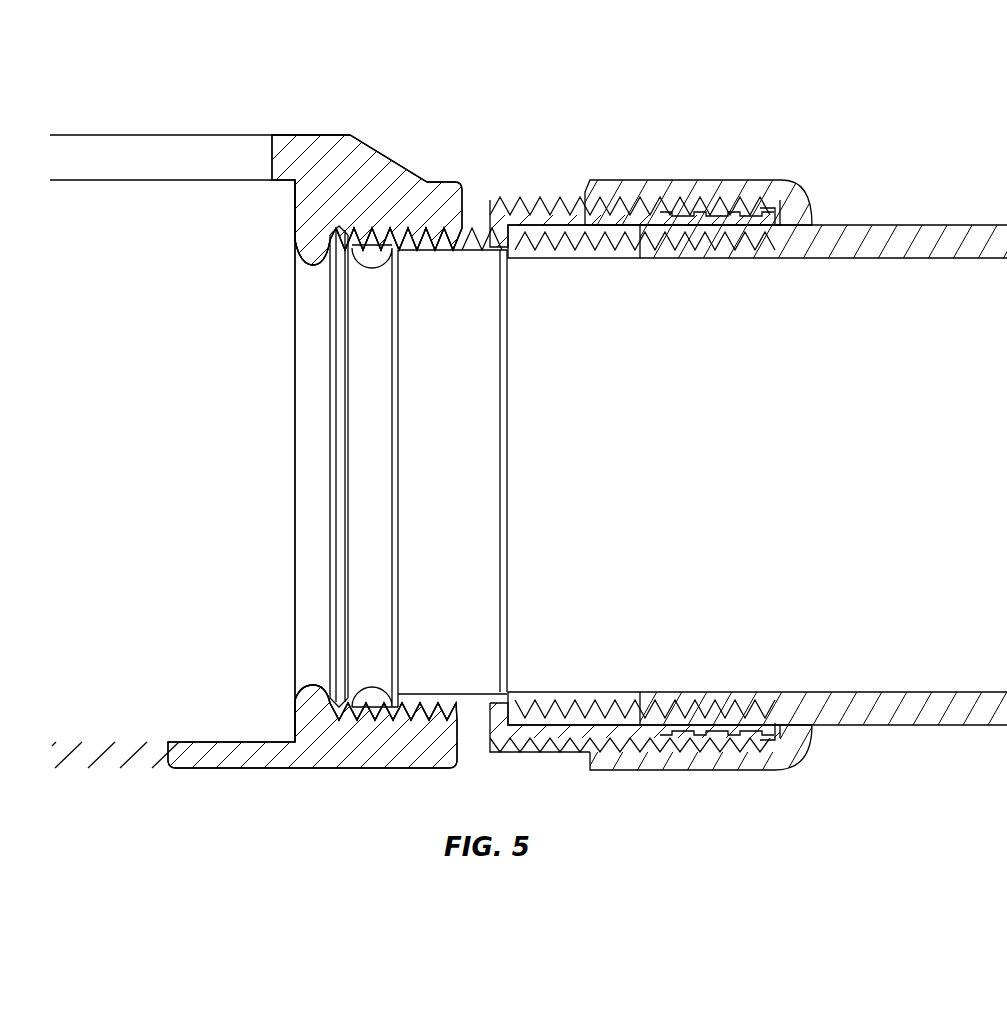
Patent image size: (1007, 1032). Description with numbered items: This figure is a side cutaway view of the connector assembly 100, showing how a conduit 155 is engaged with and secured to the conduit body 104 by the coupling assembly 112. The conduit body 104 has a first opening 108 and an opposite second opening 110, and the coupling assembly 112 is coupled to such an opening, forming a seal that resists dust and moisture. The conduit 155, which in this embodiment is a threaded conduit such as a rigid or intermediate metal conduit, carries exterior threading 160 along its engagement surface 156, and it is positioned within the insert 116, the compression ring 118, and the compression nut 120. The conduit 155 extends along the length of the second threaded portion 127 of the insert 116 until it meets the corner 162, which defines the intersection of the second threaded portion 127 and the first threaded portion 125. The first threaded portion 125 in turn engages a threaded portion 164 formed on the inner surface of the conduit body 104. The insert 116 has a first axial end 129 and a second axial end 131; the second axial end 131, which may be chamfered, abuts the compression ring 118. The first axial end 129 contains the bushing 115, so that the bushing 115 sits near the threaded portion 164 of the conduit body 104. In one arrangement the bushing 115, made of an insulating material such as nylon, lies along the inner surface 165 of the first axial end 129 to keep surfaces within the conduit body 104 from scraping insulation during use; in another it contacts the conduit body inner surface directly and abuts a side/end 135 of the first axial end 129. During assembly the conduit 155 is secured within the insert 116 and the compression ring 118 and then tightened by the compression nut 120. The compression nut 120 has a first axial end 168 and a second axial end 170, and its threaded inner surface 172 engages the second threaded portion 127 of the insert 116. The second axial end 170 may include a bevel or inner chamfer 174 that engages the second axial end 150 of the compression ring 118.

The connector assembly 100 is at (540, 85).
The conduit body 104 is at (149, 145).
The first opening 108 is at (300, 308).
The second opening 110 is at (315, 451).
The coupling assembly 112 is at (678, 152).
The bushing 115 is at (372, 262).
The insert 116 is at (500, 180).
The compression ring 118 is at (728, 218).
The compression nut 120 is at (720, 185).
The first threaded portion 125 is at (418, 238).
The second threaded portion 127 is at (523, 214).
The first axial end 129 is at (418, 613).
The second axial end 131 is at (660, 732).
The side/end 135 is at (397, 250).
The second axial end 150 is at (765, 215).
The conduit 155 is at (948, 232).
The engagement surface 156 is at (580, 238).
The exterior threading 160 is at (590, 248).
The corner 162 is at (500, 711).
The threaded portion 164 is at (450, 212).
The inner surface 165 is at (409, 692).
The first axial end 168 is at (590, 758).
The second axial end 170 is at (795, 755).
The threaded inner surface 172 is at (625, 752).
The inner chamfer 174 is at (790, 738).